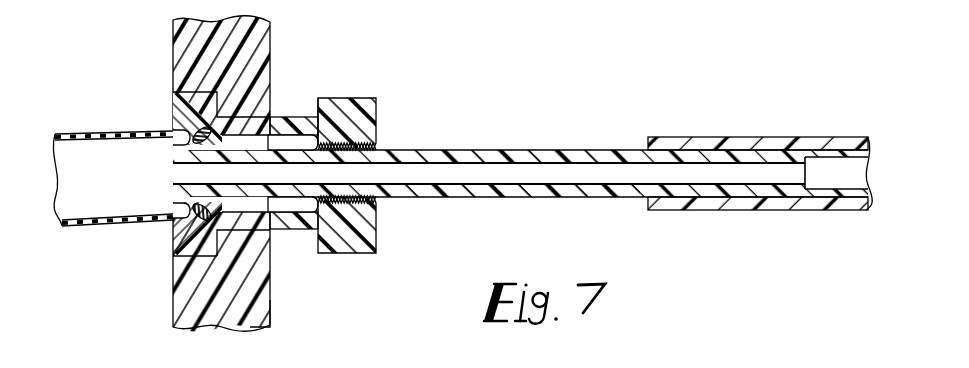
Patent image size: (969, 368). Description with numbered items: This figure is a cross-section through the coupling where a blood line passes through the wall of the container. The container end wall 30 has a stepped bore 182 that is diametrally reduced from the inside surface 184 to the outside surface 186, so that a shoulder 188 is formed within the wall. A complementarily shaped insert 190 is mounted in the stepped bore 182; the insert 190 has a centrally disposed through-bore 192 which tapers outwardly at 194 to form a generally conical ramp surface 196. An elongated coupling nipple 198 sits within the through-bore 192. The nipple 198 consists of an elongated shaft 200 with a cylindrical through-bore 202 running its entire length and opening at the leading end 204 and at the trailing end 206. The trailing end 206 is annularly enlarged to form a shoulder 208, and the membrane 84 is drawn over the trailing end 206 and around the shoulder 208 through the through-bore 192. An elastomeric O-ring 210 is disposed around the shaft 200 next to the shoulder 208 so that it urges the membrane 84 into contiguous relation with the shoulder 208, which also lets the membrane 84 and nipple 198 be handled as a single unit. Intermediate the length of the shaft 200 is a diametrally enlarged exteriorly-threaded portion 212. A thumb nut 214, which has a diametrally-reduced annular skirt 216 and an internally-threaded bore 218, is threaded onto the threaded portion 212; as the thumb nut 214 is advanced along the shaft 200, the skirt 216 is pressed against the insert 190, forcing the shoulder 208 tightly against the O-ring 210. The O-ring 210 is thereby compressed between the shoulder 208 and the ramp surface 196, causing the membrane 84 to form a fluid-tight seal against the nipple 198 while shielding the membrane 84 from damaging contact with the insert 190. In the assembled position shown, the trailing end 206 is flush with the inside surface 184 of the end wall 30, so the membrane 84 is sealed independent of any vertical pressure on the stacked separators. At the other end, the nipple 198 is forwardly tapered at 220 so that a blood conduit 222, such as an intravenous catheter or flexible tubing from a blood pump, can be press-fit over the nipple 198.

The container end wall 30 is at (258, 48).
The membrane 84 is at (64, 227).
The stepped bore 182 is at (173, 259).
The inside surface 184 is at (190, 292).
The outside surface 186 is at (278, 327).
The shoulder 188 is at (216, 246).
The insert 190 is at (180, 106).
The through-bore 192 is at (288, 122).
The outward taper 194 is at (270, 117).
The ramp surface 196 is at (195, 216).
The coupling nipple 198 is at (485, 148).
The shaft 200 is at (598, 157).
The through-bore 202 is at (596, 184).
The leading end 204 is at (808, 178).
The trailing end 206 is at (168, 136).
The shoulder 208 is at (170, 196).
The O-ring 210 is at (185, 214).
The exteriorly-threaded portion 212 is at (380, 148).
The thumb nut 214 is at (363, 122).
The annular skirt 216 is at (305, 118).
The internally-threaded bore 218 is at (375, 201).
The forward taper 220 is at (801, 142).
The blood conduit 222 is at (770, 204).